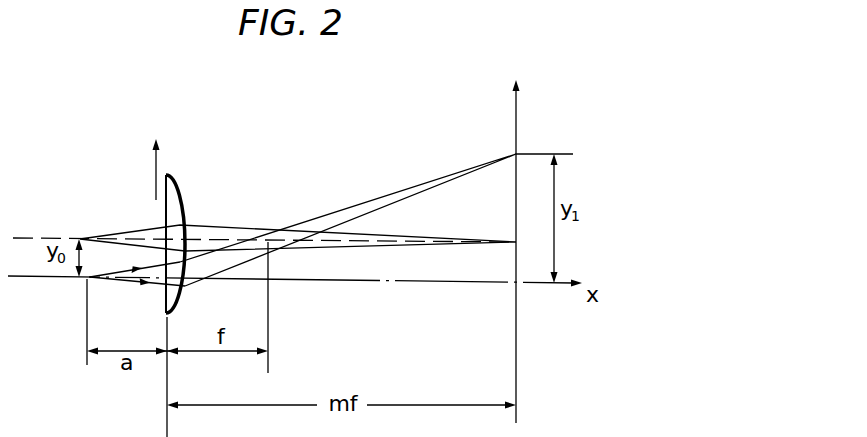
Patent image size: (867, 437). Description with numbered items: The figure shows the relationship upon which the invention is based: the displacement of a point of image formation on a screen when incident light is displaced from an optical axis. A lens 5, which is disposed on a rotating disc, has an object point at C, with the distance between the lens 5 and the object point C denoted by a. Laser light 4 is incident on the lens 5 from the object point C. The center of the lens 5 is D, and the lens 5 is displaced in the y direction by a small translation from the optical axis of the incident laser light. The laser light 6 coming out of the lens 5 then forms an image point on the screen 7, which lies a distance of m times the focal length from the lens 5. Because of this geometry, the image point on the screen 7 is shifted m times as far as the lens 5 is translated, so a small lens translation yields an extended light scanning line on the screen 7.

The laser light 4 is at (134, 285).
The lens 5 is at (178, 183).
The laser light coming out of the lens 6 is at (349, 209).
The screen 7 is at (516, 343).
The object point C is at (85, 281).
The center of the lens D is at (186, 236).